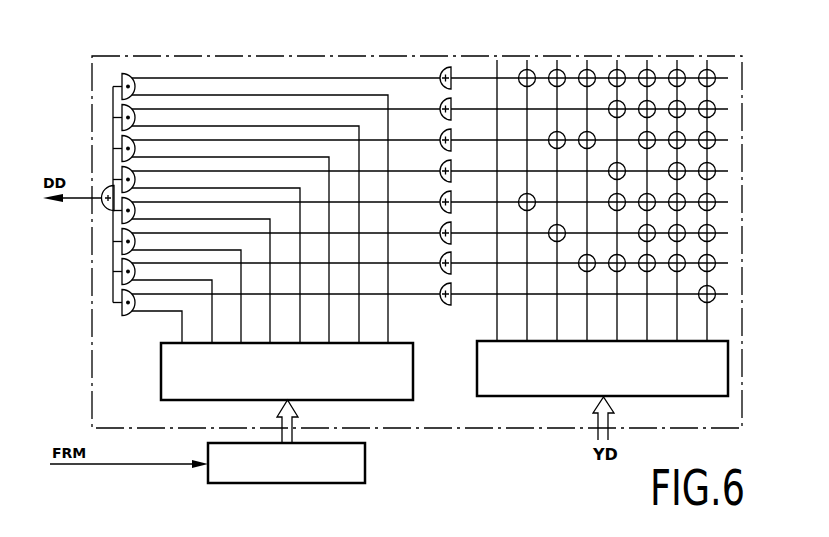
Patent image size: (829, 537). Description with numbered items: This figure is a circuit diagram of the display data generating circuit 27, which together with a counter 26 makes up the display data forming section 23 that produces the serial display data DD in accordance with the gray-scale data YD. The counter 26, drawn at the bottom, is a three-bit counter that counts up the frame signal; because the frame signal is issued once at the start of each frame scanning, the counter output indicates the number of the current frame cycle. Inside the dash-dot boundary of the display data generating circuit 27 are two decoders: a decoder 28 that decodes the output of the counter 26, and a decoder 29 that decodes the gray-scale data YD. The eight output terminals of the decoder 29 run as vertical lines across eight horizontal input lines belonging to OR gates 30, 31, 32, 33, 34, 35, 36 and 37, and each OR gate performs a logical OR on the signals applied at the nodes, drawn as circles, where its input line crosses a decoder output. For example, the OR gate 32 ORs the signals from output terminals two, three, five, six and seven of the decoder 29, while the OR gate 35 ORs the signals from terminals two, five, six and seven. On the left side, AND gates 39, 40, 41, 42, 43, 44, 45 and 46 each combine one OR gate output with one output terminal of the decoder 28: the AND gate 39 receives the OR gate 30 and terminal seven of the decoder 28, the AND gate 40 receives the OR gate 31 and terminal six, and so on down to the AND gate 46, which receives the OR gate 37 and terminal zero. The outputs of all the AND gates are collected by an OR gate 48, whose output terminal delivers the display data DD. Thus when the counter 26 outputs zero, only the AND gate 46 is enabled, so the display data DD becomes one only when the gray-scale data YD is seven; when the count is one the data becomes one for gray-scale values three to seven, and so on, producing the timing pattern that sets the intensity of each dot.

The display data forming section 23 is at (512, 430).
The counter 26 is at (366, 466).
The display data generating circuit 27 is at (735, 46).
The decoder 28 is at (161, 384).
The decoder 29 is at (477, 379).
The OR gate 30 is at (584, 72).
The OR gate 31 is at (584, 103).
The OR gate 32 is at (584, 134).
The OR gate 33 is at (584, 165).
The OR gate 34 is at (584, 196).
The OR gate 35 is at (584, 227).
The OR gate 36 is at (584, 258).
The OR gate 37 is at (584, 289).
The AND gate 39 is at (121, 82).
The AND gate 40 is at (121, 112).
The AND gate 41 is at (121, 144).
The AND gate 42 is at (121, 174).
The AND gate 43 is at (119, 224).
The AND gate 44 is at (119, 254).
The AND gate 45 is at (119, 284).
The AND gate 46 is at (119, 316).
The OR gate 48 is at (102, 206).